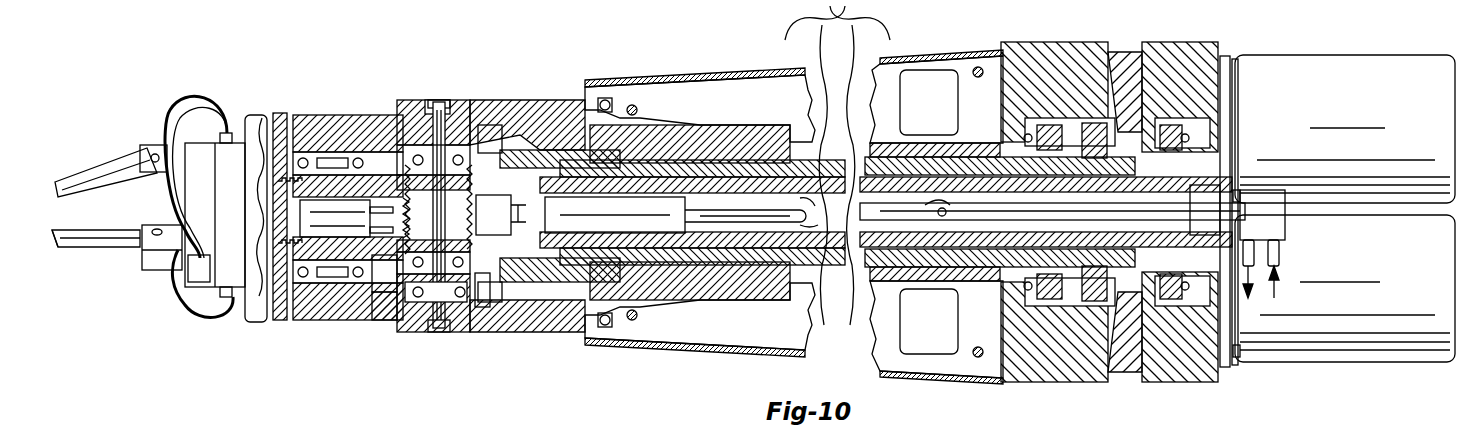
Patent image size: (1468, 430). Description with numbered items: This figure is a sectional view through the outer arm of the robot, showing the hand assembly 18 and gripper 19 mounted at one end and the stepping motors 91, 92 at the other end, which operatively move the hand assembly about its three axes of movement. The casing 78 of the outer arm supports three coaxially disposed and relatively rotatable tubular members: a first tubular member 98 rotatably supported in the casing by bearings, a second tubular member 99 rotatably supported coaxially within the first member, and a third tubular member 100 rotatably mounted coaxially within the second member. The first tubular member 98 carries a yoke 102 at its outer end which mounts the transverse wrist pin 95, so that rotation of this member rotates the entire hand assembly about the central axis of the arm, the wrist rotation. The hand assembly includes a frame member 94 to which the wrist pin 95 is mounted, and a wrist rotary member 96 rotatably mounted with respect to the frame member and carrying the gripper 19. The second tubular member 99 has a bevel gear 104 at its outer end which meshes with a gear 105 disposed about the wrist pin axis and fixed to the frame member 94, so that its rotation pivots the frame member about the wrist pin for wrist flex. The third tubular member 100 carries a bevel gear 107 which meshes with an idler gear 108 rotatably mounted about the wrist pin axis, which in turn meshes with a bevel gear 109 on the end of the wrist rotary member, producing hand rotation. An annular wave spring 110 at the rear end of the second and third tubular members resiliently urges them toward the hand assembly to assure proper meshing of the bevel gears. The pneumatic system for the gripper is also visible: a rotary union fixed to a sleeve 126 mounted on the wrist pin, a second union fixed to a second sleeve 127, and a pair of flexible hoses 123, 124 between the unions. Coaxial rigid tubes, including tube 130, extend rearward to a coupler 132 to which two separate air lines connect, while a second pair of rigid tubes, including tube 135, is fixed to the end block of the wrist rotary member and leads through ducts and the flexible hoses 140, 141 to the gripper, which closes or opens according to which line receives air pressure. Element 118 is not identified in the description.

The hand assembly 18 is at (245, 105).
The gripper 19 is at (99, 174).
The casing 78 is at (750, 82).
The stepping motor 91 is at (1420, 103).
The stepping motor 92 is at (1428, 273).
The frame member 94 is at (358, 114).
The transverse wrist pin 95 is at (431, 217).
The wrist rotary member 96 is at (258, 322).
The first tubular member 98 is at (885, 149).
The second tubular member 99 is at (894, 170).
The third tubular member 100 is at (909, 175).
The yoke 102 is at (510, 110).
The bevel gear 104 is at (538, 140).
The gear 105 is at (487, 132).
The bevel gear 107 is at (500, 279).
The idler gear 108 is at (390, 314).
The bevel gear 109 is at (392, 271).
The annular wave spring 110 is at (1171, 142).
The bearing block 118 is at (1082, 131).
The flexible hose 123 is at (500, 213).
The flexible hose 124 is at (502, 221).
The sleeve 126 is at (332, 219).
The second sleeve 127 is at (679, 214).
The rigid tube 130 is at (925, 206).
The coupler 132 is at (1288, 225).
The rigid tube 135 is at (255, 218).
The flexible hose 140 is at (196, 98).
The flexible hose 141 is at (196, 309).